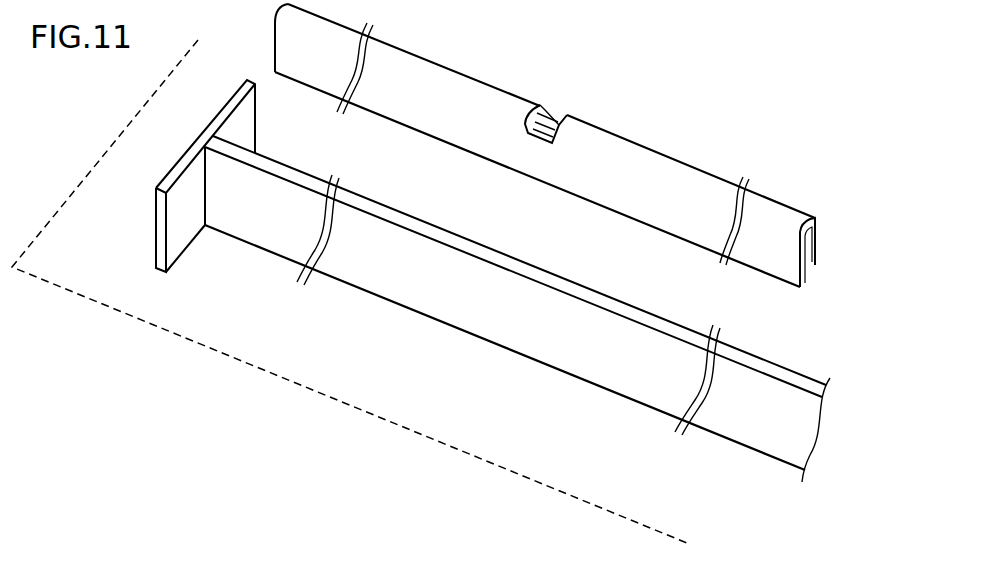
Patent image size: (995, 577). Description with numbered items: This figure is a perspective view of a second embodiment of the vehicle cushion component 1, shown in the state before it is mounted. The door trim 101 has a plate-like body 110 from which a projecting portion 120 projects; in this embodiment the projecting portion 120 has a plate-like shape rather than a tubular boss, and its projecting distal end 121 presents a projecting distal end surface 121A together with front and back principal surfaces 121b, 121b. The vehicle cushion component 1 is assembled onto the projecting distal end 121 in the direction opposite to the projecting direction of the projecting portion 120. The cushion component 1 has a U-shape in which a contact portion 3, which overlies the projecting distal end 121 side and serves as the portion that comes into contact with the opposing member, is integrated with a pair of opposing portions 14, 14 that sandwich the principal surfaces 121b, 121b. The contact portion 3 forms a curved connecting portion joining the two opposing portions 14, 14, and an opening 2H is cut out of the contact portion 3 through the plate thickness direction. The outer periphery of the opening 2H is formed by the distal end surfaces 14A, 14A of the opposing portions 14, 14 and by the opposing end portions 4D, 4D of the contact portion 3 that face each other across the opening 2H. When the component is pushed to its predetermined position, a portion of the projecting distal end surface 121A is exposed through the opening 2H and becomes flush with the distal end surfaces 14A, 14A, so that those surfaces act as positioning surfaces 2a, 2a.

The vehicle cushion component 1 is at (547, 176).
The contact portion 3 is at (551, 111).
The opposing portion 14 is at (803, 283).
The distal end surface 14A is at (550, 114).
The positioning surface 2a is at (577, 129).
The opening 2H is at (579, 129).
The opposing end portion 4D is at (517, 109).
The door trim 101 is at (349, 298).
The body 110 is at (273, 266).
The projecting portion 120 is at (517, 340).
The projecting distal end 121 is at (515, 266).
The projecting distal end surface 121A is at (515, 266).
The principal surface 121b is at (473, 245).